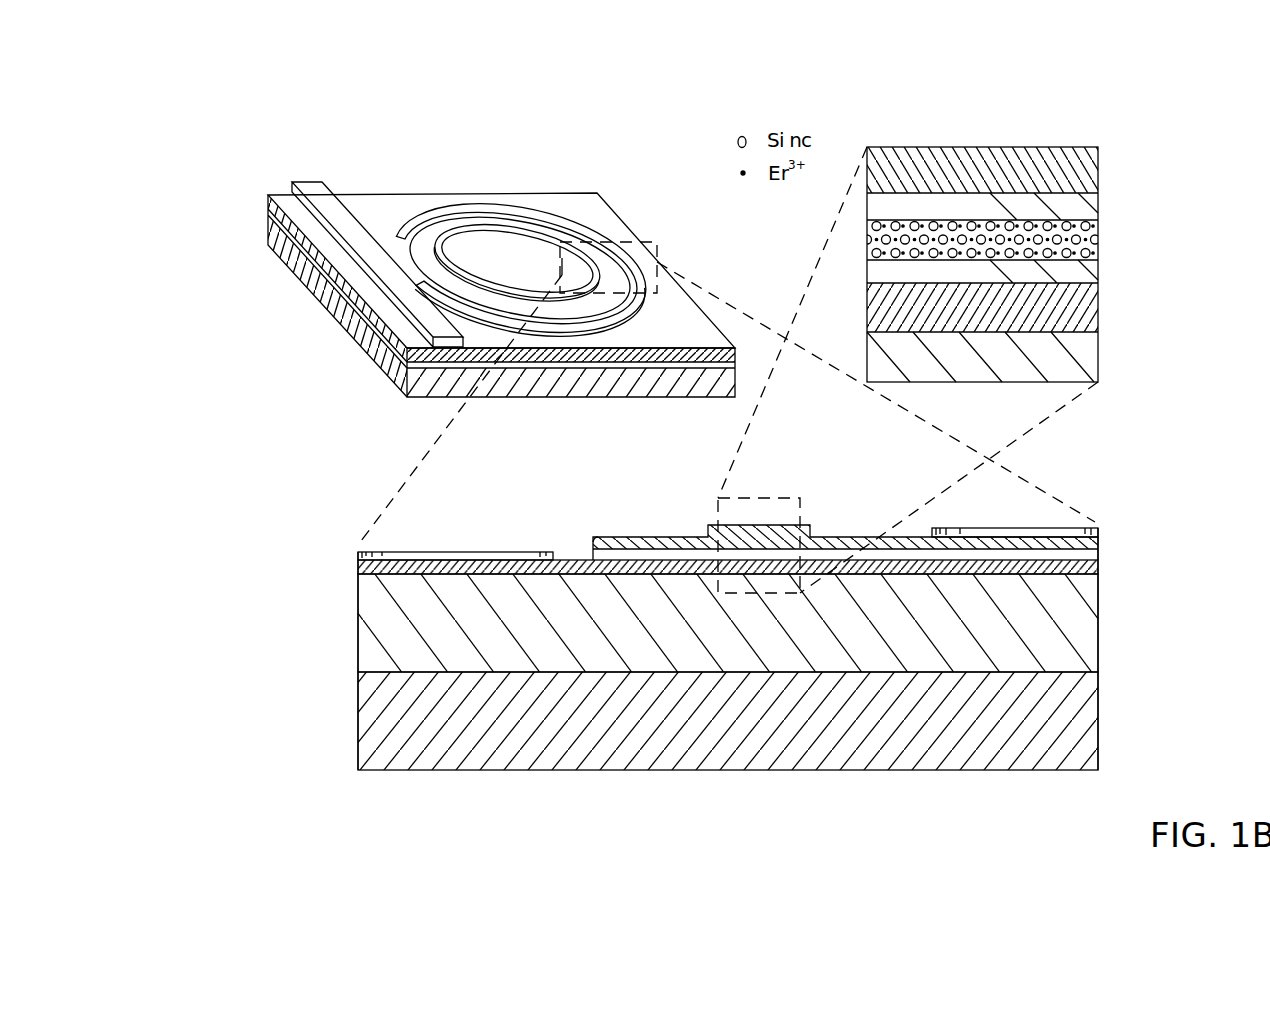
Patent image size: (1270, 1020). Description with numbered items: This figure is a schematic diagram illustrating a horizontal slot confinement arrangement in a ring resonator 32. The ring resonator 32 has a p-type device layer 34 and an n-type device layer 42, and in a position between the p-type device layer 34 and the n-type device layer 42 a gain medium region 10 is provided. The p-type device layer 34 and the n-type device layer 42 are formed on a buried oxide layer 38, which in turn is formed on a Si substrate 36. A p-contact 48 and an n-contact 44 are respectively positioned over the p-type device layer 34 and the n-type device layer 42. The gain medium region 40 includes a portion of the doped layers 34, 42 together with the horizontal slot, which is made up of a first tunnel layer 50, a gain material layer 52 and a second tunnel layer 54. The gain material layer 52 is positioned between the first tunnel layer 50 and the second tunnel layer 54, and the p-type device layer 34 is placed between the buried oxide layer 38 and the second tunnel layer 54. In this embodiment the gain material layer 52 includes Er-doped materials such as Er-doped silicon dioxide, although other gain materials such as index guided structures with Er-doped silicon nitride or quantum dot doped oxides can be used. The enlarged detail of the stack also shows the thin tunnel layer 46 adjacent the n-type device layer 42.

The gain medium region 10 is at (591, 541).
The ring resonator 32 is at (158, 696).
The p-type device layer 34 is at (1100, 305).
The Si substrate 36 is at (502, 763).
The buried oxide layer 38 is at (1100, 369).
The gain medium region 40 is at (767, 555).
The n-type device layer 42 is at (936, 147).
The n-contact 44 is at (1032, 526).
The 3 nm tunnel layer 46 is at (1100, 206).
The p-contact 48 is at (475, 550).
The first tunnel layer 50 is at (1100, 233).
The gain material layer 52 is at (867, 215).
The second tunnel layer 54 is at (1100, 273).